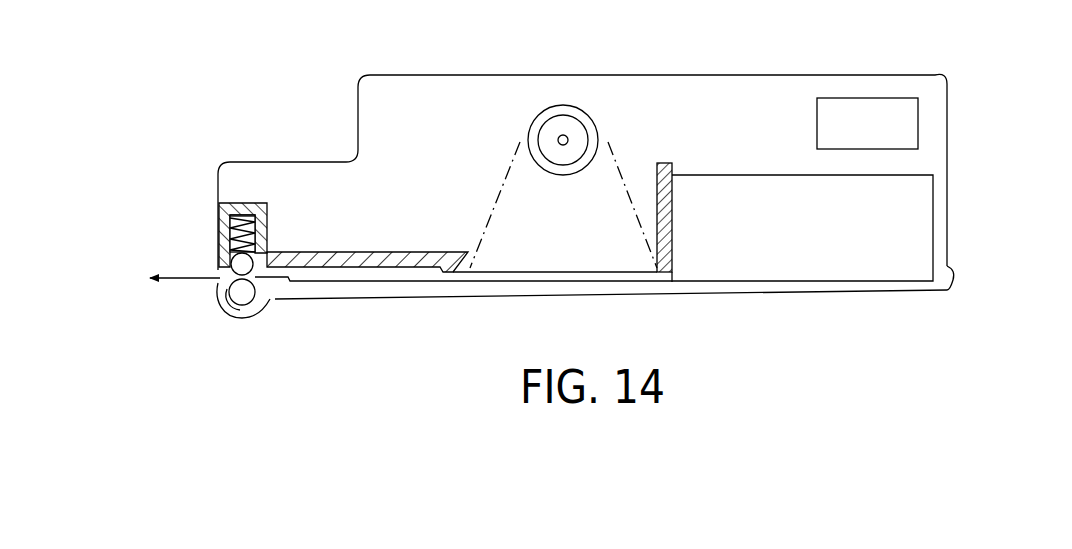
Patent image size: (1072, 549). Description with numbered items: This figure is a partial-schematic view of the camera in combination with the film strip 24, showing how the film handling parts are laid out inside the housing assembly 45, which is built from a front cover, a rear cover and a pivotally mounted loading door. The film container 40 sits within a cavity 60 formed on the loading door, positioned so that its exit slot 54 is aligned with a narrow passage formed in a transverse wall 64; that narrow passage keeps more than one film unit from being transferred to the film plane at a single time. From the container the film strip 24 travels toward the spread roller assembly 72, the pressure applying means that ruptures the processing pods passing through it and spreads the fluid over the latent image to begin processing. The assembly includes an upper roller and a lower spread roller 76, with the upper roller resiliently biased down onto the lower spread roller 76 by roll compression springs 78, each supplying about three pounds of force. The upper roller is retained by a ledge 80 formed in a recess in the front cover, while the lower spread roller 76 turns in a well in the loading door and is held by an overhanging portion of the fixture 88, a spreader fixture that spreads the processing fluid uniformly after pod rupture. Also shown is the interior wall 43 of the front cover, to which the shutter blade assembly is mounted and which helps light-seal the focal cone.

The housing assembly 45 is at (956, 136).
The interior wall 43 is at (536, 247).
The film container 40 is at (935, 218).
The exit slot 54 is at (672, 284).
The transverse wall 64 is at (650, 279).
The ledge 80 is at (765, 291).
The cavity 60 is at (867, 269).
The fixture 88 is at (278, 271).
The roll compression springs 78 is at (242, 214).
The film strip 24 is at (247, 259).
The lower spread roller 76 is at (240, 298).
The spread roller assembly 72 is at (205, 262).